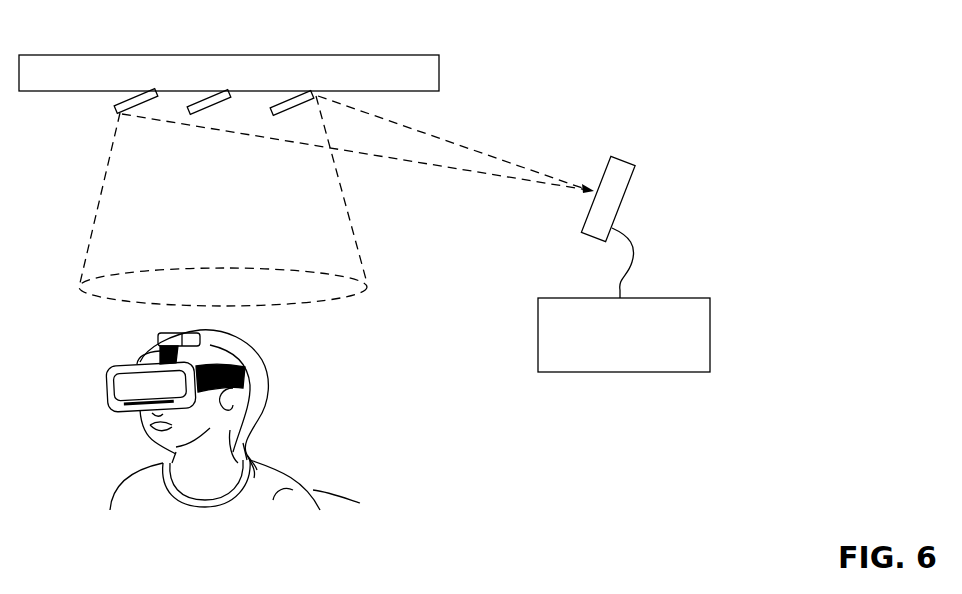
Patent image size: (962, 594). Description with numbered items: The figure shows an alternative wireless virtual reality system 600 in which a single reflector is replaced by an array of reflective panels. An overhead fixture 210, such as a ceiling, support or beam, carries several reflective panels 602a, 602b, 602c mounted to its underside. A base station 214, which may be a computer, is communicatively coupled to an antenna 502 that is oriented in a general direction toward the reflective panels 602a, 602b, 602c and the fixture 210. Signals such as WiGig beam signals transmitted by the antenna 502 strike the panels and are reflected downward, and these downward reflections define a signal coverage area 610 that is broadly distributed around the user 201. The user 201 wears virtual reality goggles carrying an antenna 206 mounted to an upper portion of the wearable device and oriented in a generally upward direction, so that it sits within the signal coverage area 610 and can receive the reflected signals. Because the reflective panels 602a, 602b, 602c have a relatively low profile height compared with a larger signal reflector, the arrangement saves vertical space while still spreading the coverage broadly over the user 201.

The wireless virtual reality system 600 is at (562, 35).
The overhead fixture 210 is at (106, 63).
The reflective panel 602a is at (150, 93).
The reflective panel 602b is at (222, 93).
The reflective panel 602c is at (297, 95).
The signal coverage area 610 is at (131, 219).
The antenna 502 is at (620, 168).
The base station 214 is at (588, 372).
The antenna 206 is at (162, 337).
The user 201 is at (326, 492).